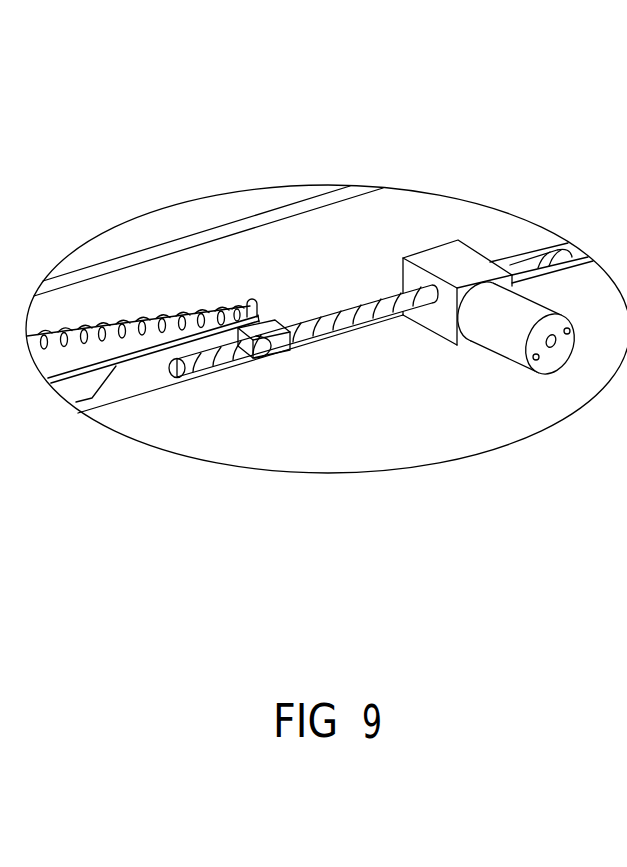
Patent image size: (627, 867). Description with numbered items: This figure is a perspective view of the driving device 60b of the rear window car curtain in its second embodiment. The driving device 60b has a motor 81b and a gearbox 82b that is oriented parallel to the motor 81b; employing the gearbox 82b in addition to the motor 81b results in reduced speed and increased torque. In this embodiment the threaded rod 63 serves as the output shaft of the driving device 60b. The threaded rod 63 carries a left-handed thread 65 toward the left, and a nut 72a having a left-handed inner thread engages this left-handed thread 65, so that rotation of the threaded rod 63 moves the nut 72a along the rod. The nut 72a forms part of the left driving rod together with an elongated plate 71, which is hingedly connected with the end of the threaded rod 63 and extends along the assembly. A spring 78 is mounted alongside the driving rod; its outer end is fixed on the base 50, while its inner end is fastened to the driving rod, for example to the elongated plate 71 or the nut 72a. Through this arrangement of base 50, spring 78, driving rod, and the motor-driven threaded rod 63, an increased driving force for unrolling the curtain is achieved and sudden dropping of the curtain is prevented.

The base 50 is at (408, 230).
The threaded rod 63 is at (528, 262).
The left-handed thread 65 is at (207, 378).
The elongated plate 71 is at (77, 382).
The nut 72a is at (268, 357).
The spring 78 is at (120, 330).
The motor 81b is at (513, 345).
The gearbox 82b is at (442, 313).
The driving device 60b is at (450, 360).